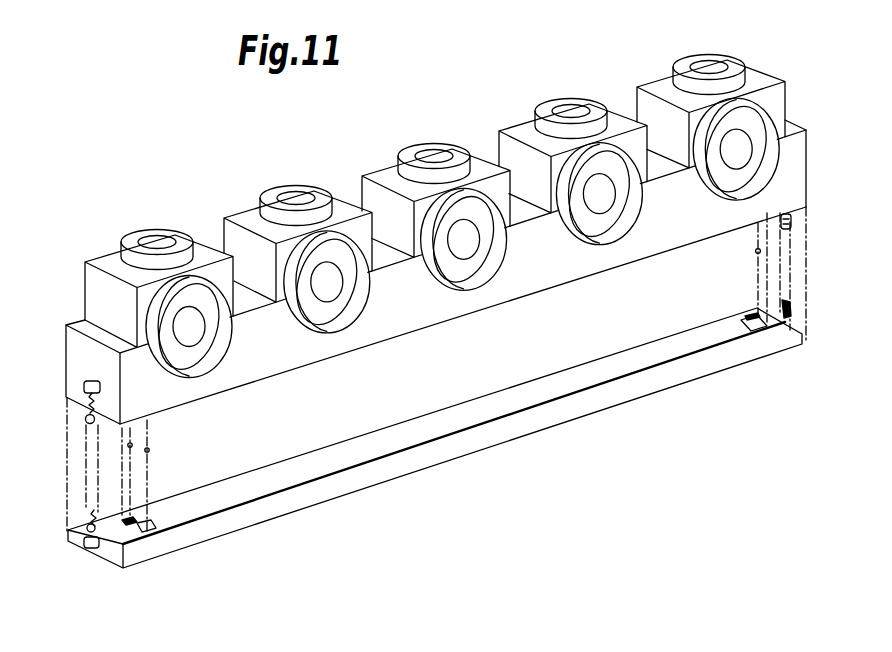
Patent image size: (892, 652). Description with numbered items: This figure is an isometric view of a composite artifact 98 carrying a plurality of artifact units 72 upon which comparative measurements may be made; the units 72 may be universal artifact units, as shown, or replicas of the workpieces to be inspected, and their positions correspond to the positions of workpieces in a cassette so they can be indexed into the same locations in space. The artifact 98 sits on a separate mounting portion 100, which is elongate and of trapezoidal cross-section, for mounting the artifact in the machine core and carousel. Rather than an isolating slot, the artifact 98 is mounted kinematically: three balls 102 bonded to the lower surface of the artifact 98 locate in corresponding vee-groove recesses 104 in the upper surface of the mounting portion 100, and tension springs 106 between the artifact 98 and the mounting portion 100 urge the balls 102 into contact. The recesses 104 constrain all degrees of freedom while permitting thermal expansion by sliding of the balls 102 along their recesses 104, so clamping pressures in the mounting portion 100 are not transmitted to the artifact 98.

The composite artifact 98 is at (296, 154).
The artifact unit 72 is at (108, 261).
The mounting portion 100 is at (453, 450).
The ball 102 is at (150, 450).
The vee-groove recess 104 is at (153, 533).
The tension spring 106 is at (83, 420).